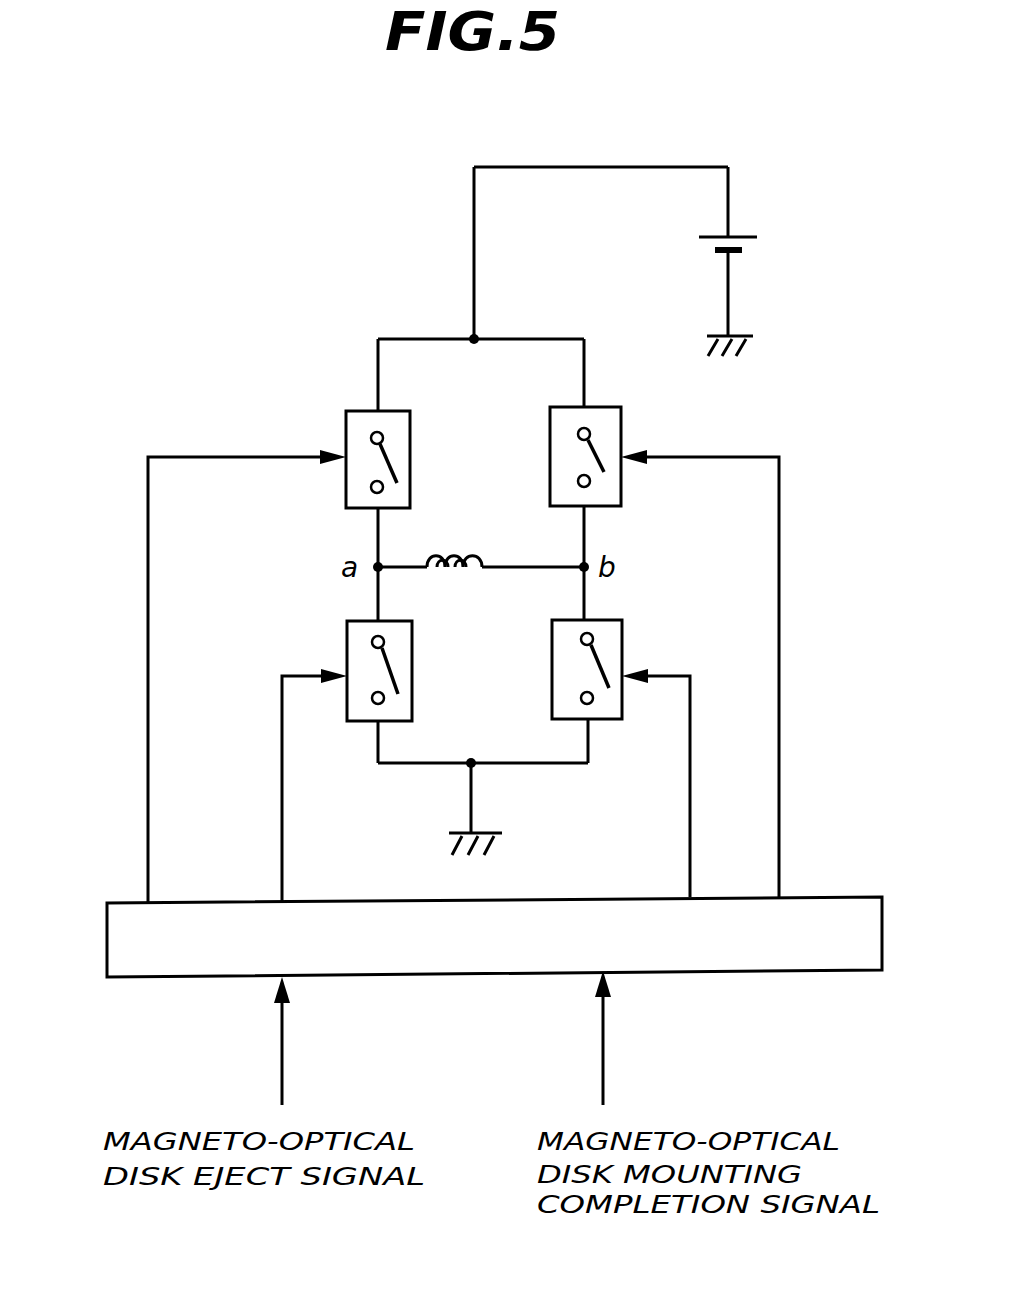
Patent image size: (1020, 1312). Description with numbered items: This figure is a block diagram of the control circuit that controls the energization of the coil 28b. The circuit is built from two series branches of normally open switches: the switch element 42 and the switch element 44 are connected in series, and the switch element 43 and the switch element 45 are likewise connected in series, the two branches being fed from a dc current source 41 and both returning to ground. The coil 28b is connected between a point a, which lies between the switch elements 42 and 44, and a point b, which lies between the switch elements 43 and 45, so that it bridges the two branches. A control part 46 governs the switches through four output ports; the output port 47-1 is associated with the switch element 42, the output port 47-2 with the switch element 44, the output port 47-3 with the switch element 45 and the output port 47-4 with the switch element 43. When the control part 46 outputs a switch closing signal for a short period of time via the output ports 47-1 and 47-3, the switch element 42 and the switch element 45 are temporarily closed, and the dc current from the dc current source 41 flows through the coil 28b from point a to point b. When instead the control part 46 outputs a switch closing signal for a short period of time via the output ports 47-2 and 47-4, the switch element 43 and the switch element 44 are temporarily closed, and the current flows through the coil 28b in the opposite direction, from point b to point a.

The dc current source 41 is at (745, 226).
The switch element 42 is at (355, 411).
The switch element 43 is at (622, 433).
The switch element 44 is at (347, 648).
The switch element 45 is at (622, 660).
The coil 28b is at (458, 549).
The control part 46 is at (726, 975).
The output port 47-1 is at (148, 903).
The output port 47-2 is at (282, 903).
The output port 47-3 is at (690, 897).
The output port 47-4 is at (779, 897).